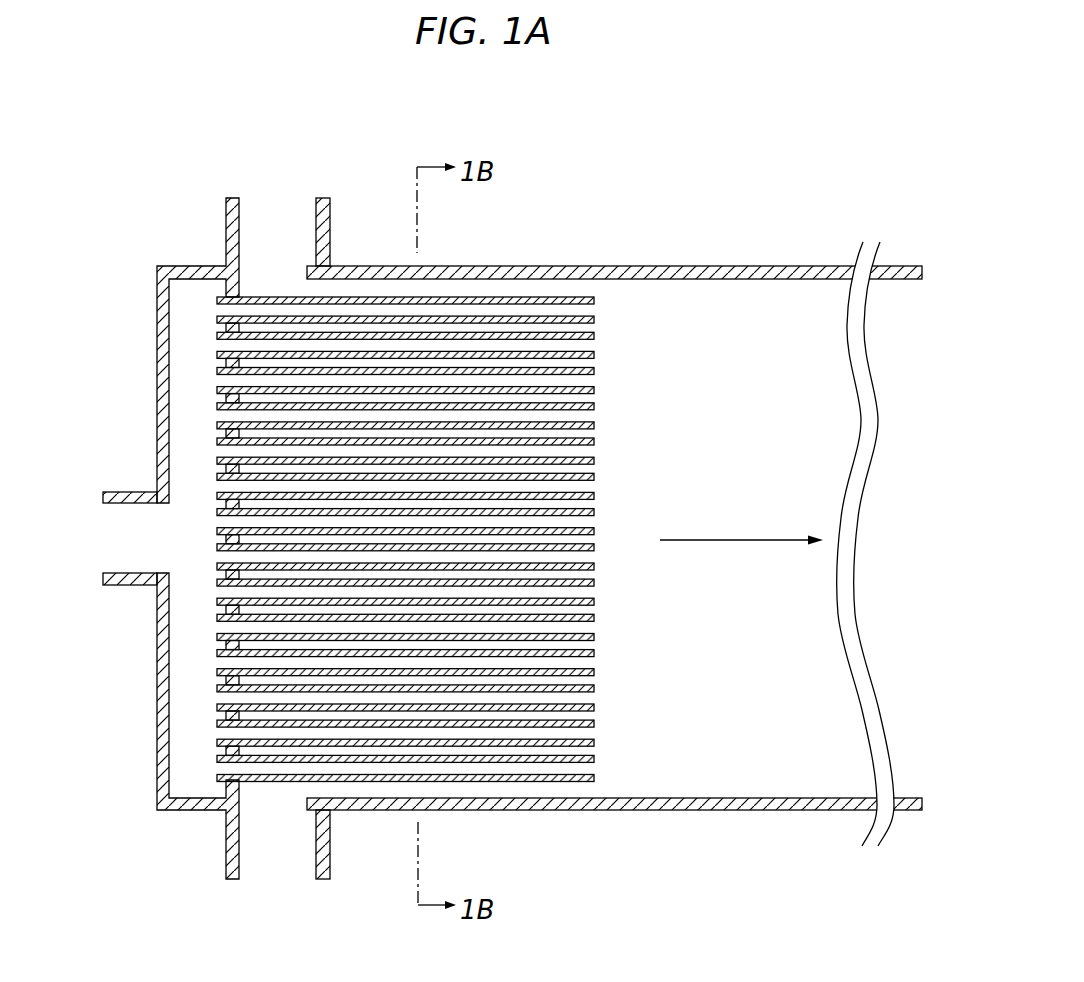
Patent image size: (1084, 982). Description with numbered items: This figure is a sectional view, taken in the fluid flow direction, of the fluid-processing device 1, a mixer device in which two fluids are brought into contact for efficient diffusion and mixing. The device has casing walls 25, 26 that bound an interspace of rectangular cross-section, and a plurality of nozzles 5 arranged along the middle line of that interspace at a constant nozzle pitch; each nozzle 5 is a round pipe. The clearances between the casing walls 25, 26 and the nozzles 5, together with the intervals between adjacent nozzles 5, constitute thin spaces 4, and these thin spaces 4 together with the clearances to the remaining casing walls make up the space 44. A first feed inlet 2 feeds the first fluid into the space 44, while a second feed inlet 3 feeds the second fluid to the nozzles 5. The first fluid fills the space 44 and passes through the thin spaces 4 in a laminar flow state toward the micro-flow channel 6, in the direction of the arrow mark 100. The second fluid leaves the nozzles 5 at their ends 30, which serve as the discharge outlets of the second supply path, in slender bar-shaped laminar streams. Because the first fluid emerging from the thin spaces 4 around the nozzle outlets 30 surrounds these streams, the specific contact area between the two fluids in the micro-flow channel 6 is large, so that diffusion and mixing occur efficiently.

The fluid-processing device 1 is at (742, 203).
The first feed inlet 2 is at (282, 220).
The second feed inlet 3 is at (128, 536).
The thin space 4 is at (494, 287).
The space 44 is at (459, 287).
The nozzle 5 is at (366, 780).
The micro-flow channel 6 is at (687, 735).
The casing wall 25 is at (789, 265).
The casing wall 26 is at (783, 811).
The nozzle end 30 is at (594, 763).
The arrow mark 100 is at (731, 538).